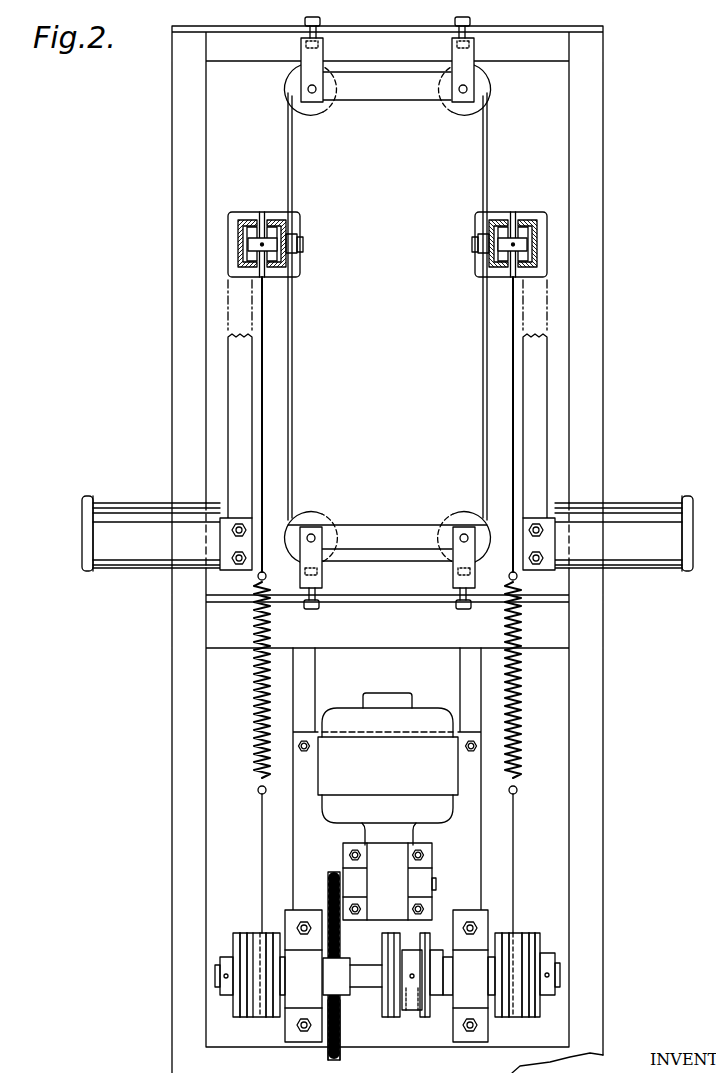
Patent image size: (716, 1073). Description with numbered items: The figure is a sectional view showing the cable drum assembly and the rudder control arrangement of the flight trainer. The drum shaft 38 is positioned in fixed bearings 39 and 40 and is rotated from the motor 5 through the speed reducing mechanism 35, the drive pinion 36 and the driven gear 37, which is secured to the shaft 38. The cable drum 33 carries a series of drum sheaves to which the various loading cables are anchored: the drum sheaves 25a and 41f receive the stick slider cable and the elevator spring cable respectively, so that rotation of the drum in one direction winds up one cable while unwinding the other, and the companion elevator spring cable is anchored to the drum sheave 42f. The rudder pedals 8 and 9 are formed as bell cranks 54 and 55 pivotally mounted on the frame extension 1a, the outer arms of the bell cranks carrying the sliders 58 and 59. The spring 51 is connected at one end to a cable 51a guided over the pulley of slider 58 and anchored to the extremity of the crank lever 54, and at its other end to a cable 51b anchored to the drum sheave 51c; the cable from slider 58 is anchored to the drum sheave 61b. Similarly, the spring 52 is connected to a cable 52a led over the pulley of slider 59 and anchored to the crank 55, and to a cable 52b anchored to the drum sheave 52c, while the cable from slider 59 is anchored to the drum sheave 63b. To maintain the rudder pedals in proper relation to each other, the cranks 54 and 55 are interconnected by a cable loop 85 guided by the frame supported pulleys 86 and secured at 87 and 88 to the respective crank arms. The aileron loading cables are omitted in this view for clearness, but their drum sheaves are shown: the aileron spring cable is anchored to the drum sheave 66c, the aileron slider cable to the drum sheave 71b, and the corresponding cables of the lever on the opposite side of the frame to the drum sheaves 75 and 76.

The frame extension 1a is at (192, 737).
The motor 5 is at (388, 769).
The rudder pedal 8 is at (113, 506).
The rudder pedal 9 is at (648, 508).
The drum sheave 25a is at (388, 935).
The cable drum 33 is at (548, 937).
The speed reducing mechanism 35 is at (395, 878).
The drive pinion 36 is at (330, 872).
The driven gear 37 is at (341, 1052).
The shaft 38 is at (367, 984).
The fixed bearing 39 is at (291, 1043).
The fixed bearing 40 is at (478, 1040).
The drum sheave 41f is at (406, 1018).
The drum sheave 42f is at (426, 1018).
The spring 51 is at (254, 704).
The cable 51a is at (263, 434).
The cable 51b is at (261, 841).
The drum sheave 51c is at (251, 934).
The spring 52 is at (521, 705).
The cable 52a is at (512, 433).
The cable 52b is at (514, 837).
The drum sheave 52c is at (517, 934).
The bell crank 54 is at (235, 375).
The bell crank 55 is at (543, 358).
The slider 58 is at (262, 212).
The slider 59 is at (512, 210).
The drum sheave 61b is at (273, 933).
The drum sheave 63b is at (502, 933).
The drum sheave 66c is at (537, 1017).
The drum sheave 71b is at (521, 1017).
The drum sheave 75 is at (248, 1018).
The drum sheave 76 is at (236, 1018).
The cable loop 85 is at (293, 188).
The pulley 86 is at (318, 110).
The securing point 87 is at (303, 251).
The securing point 88 is at (471, 248).